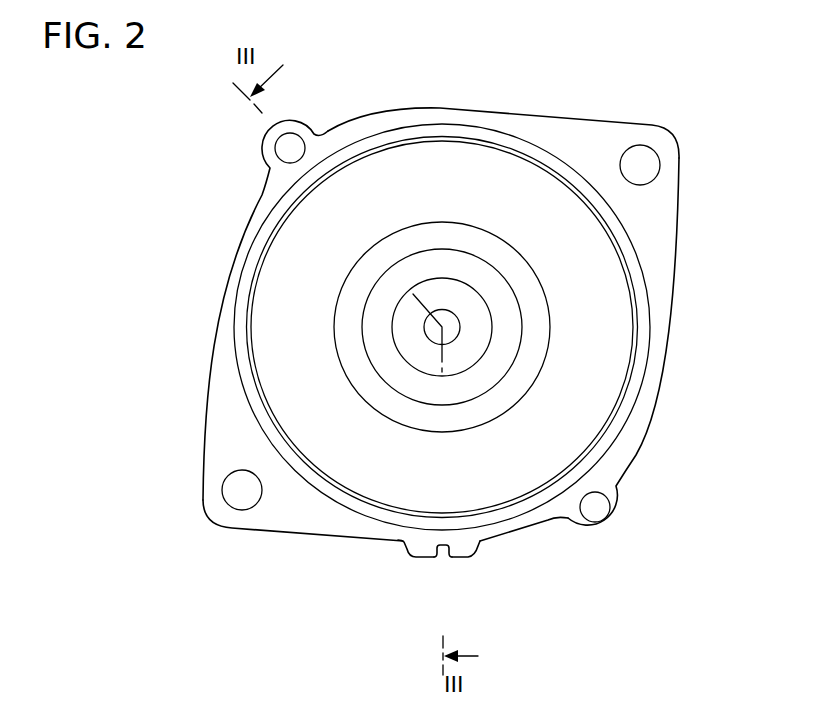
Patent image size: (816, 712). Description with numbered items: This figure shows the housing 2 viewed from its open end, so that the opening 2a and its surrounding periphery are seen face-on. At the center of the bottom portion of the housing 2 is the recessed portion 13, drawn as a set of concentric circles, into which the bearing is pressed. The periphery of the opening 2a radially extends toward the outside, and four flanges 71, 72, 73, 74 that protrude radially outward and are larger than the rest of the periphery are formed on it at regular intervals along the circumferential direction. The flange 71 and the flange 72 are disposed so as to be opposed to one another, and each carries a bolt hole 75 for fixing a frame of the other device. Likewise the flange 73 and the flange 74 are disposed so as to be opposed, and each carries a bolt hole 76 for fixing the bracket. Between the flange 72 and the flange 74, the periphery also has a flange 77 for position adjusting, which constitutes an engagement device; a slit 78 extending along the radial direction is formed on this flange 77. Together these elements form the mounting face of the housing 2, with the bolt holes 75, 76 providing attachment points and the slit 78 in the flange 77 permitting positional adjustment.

The housing 2 is at (456, 108).
The opening 2a is at (578, 401).
The recessed portion 13 is at (507, 348).
The flange 71 is at (618, 128).
The flange 72 is at (292, 519).
The flange 73 is at (300, 130).
The flange 74 is at (620, 495).
The bolt holes 75 is at (640, 183).
The bolt holes 76 is at (281, 160).
The flange for position adjusting 77 is at (422, 553).
The slit 78 is at (444, 553).